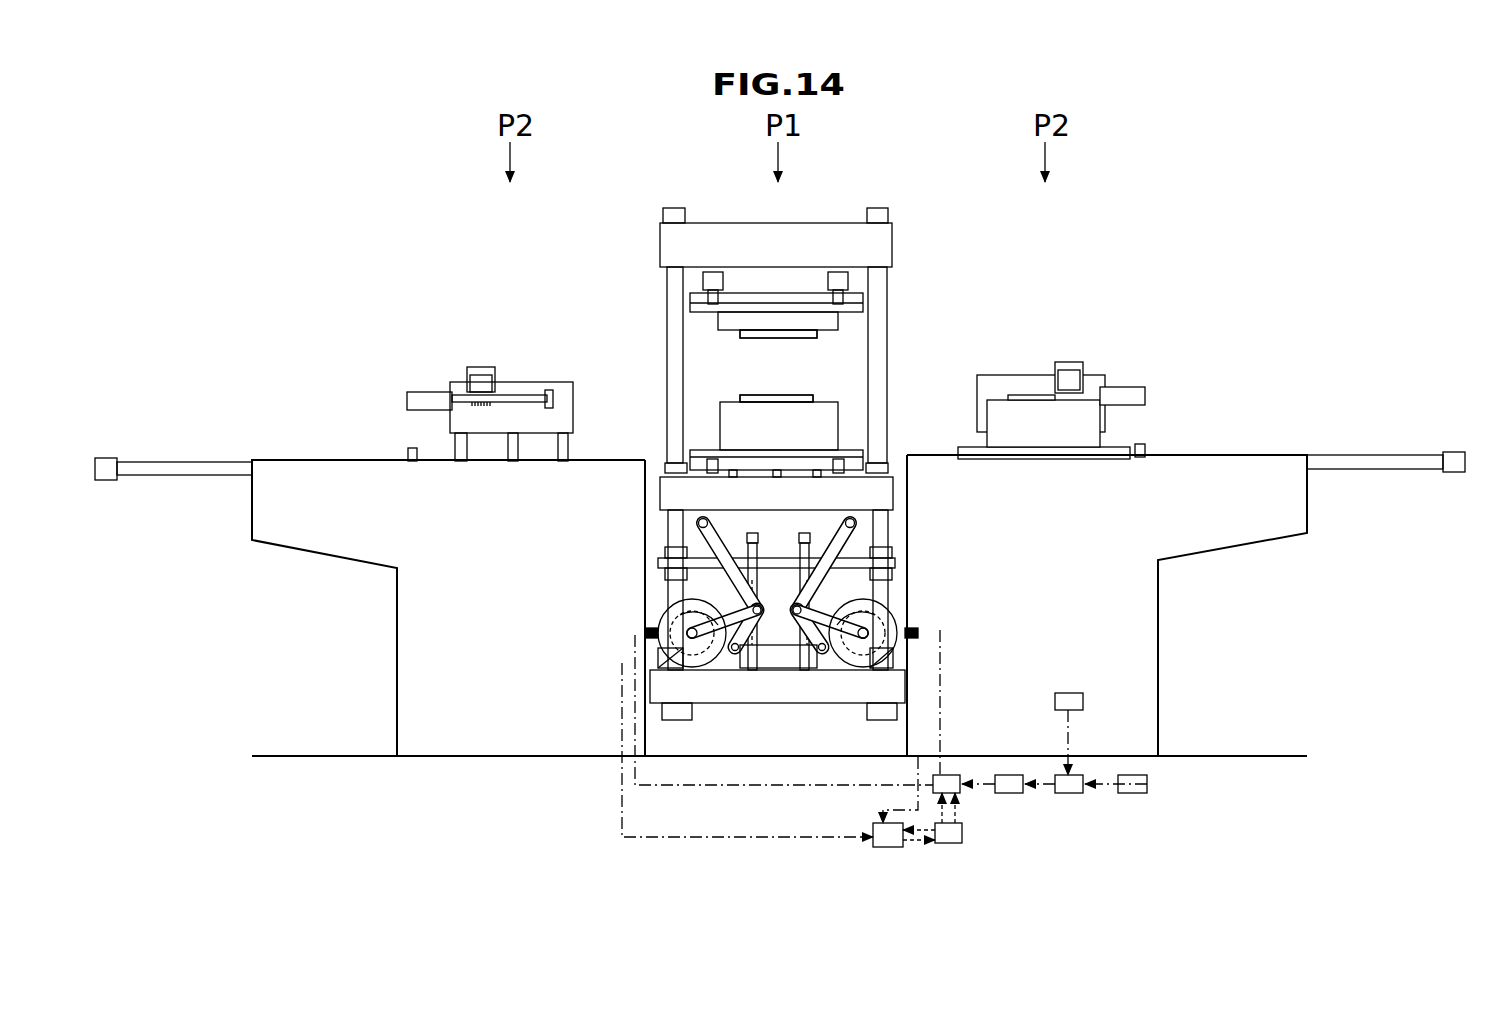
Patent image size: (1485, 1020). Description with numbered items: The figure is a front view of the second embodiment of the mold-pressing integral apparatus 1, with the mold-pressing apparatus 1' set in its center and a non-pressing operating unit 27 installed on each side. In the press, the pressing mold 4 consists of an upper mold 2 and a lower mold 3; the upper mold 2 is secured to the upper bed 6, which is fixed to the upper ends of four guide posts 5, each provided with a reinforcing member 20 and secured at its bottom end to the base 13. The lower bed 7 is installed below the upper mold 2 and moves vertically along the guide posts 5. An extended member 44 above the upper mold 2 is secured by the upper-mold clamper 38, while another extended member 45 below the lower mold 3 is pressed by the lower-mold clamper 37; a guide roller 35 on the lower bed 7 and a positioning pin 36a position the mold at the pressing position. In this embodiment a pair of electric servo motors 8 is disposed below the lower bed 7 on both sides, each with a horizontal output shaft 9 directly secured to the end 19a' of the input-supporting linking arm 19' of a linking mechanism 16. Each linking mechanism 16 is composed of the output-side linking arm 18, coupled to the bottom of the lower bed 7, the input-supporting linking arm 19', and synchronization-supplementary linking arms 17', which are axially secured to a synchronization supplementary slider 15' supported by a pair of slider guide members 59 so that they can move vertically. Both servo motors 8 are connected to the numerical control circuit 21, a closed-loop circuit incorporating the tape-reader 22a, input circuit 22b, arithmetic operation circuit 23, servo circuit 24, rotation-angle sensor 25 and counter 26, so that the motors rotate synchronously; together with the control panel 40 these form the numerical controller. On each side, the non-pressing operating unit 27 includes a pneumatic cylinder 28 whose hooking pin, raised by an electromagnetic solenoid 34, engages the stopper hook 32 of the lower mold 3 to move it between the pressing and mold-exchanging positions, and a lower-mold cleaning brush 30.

The mold-pressing integral apparatus 1 is at (794, 161).
The mold-pressing apparatus 1' is at (784, 184).
The upper mold 2 is at (800, 340).
The lower mold 3 is at (800, 395).
The pressing mold 4 is at (834, 342).
The guide posts 5 is at (667, 407).
The upper bed 6 is at (660, 245).
The lower bed 7 is at (852, 491).
The electric servo motors 8 is at (693, 652).
The output shafts 9 is at (733, 655).
The base 13 is at (755, 703).
The synchronization supplementary slider 15' is at (778, 674).
The linking mechanism 16 is at (715, 598).
The synchronization-supplementary linking arms 17' is at (829, 617).
The output-side linking arm 18 is at (848, 578).
The input-supporting linking arm 19' is at (849, 613).
The end of supporting linking arm 19a' is at (745, 658).
The reinforcing member 20 is at (862, 562).
The numerical control circuit 21 is at (1030, 833).
The tape-reader 22a is at (1133, 793).
The input circuit 22b is at (1070, 793).
The arithmetic operation circuit 23 is at (1010, 793).
The servo circuit 24 is at (956, 793).
The rotation-angle sensor 25 is at (888, 847).
The counter 26 is at (948, 843).
The non-pressing operating unit 27 is at (345, 252).
The pneumatic cylinder 28 is at (193, 462).
The lower-mold cleaning brush 30 is at (428, 377).
The stopper hook 32 is at (660, 470).
The electromagnetic solenoid 34 is at (410, 448).
The guide roller 35 is at (817, 477).
The positioning pin 36a is at (872, 470).
The lower-mold clamper 37 is at (711, 461).
The upper-mold clamper 38 is at (700, 297).
The control panel 40 is at (1068, 693).
The extended member 44 is at (777, 295).
The extended member 45 is at (765, 468).
The slider guide members 59 is at (800, 540).